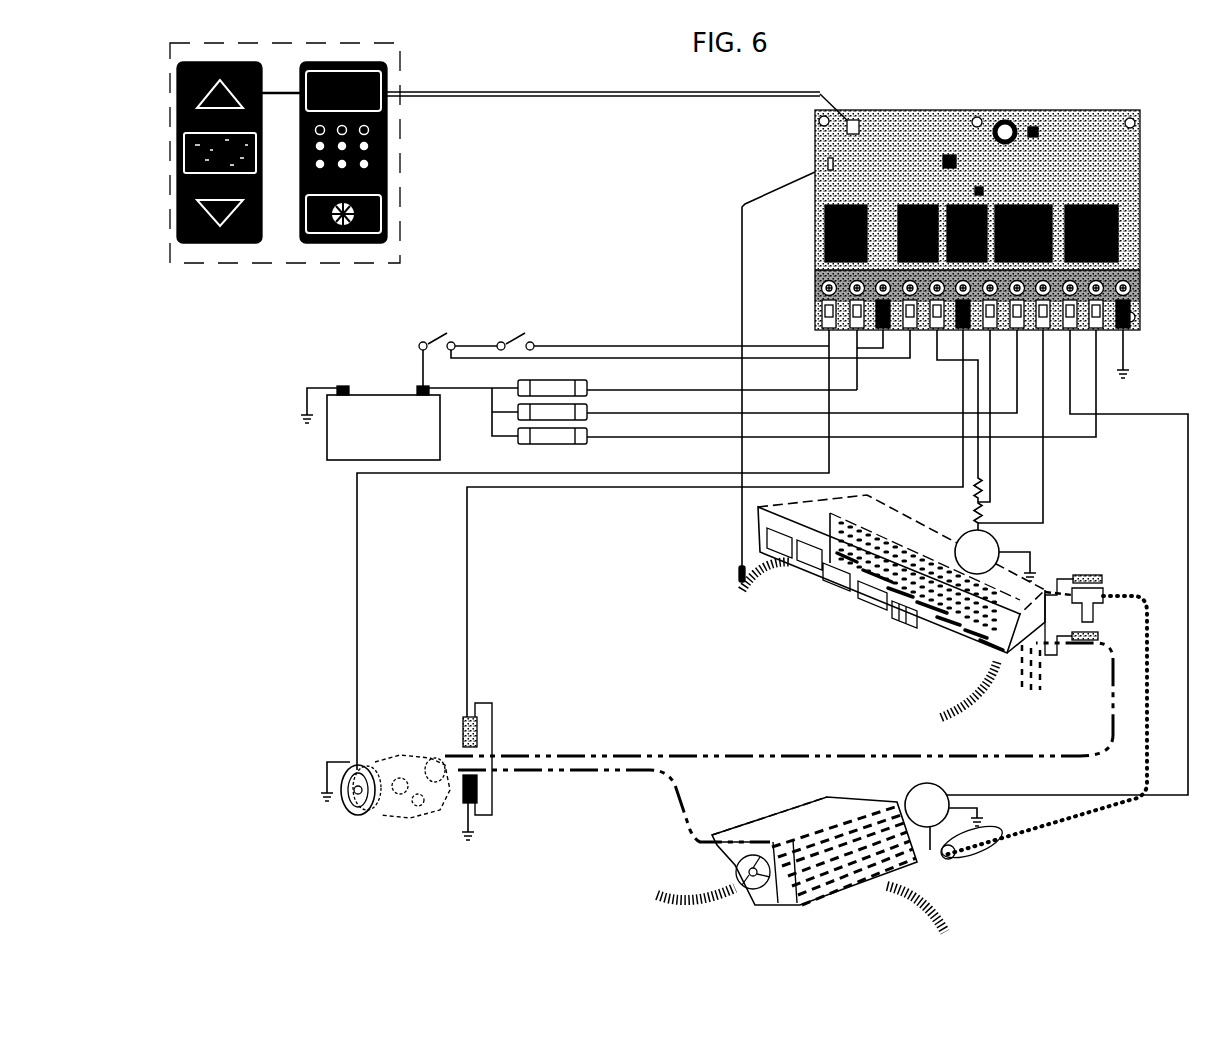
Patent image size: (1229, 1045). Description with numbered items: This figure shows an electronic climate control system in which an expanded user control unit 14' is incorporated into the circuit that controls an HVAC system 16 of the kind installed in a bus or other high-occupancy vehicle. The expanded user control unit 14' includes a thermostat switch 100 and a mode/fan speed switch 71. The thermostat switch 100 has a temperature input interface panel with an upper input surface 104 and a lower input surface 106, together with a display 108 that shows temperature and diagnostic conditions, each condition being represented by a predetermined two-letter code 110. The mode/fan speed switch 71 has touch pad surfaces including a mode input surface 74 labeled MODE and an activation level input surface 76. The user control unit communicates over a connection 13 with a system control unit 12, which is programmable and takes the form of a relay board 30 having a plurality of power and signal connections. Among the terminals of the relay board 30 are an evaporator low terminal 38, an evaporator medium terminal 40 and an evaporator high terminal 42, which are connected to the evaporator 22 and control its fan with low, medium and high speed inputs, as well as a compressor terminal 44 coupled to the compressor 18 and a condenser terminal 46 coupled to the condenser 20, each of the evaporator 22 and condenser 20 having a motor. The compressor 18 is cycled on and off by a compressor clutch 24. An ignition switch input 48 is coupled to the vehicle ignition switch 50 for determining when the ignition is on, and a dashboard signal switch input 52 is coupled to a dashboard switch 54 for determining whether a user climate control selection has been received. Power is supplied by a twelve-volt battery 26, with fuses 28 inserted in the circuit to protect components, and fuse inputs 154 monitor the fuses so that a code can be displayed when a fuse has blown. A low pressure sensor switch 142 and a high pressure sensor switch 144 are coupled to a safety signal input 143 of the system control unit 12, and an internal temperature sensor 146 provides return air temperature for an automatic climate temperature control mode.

The thermostat switch 100 is at (195, 151).
The mode/fan speed switch 71 is at (369, 129).
The expanded user control unit 14' is at (312, 149).
The upper input surface 104 is at (178, 84).
The two-letter code 110 is at (184, 152).
The display 108 is at (184, 176).
The lower input surface 106 is at (178, 243).
The mode input surface 74 is at (388, 110).
The activation level input surface 76 is at (388, 212).
The connection 13 is at (645, 98).
The system control unit 12 is at (1137, 106).
The relay board 30 is at (1143, 178).
The compressor terminal 44 is at (822, 330).
The dashboard signal switch input 52 is at (865, 336).
The ignition switch input 48 is at (883, 334).
The evaporator low terminal 38 is at (934, 334).
The safety signal input 143 is at (960, 334).
The evaporator medium terminal 40 is at (990, 336).
The evaporator high terminal 42 is at (1043, 336).
The condenser terminal 46 is at (1070, 336).
The vehicle ignition switch 50 is at (441, 335).
The dashboard switch 54 is at (522, 335).
The 12-volt battery 26 is at (378, 393).
The fuses 28 is at (590, 387).
The fuse inputs 154 is at (686, 398).
The internal temperature sensor 146 is at (738, 554).
The evaporator 22 is at (910, 640).
The HVAC system 16 is at (1206, 531).
The condenser 20 is at (768, 816).
The low pressure sensor switch 142 is at (462, 725).
The high pressure sensor switch 144 is at (462, 803).
The compressor clutch 24 is at (362, 818).
The compressor 18 is at (400, 765).